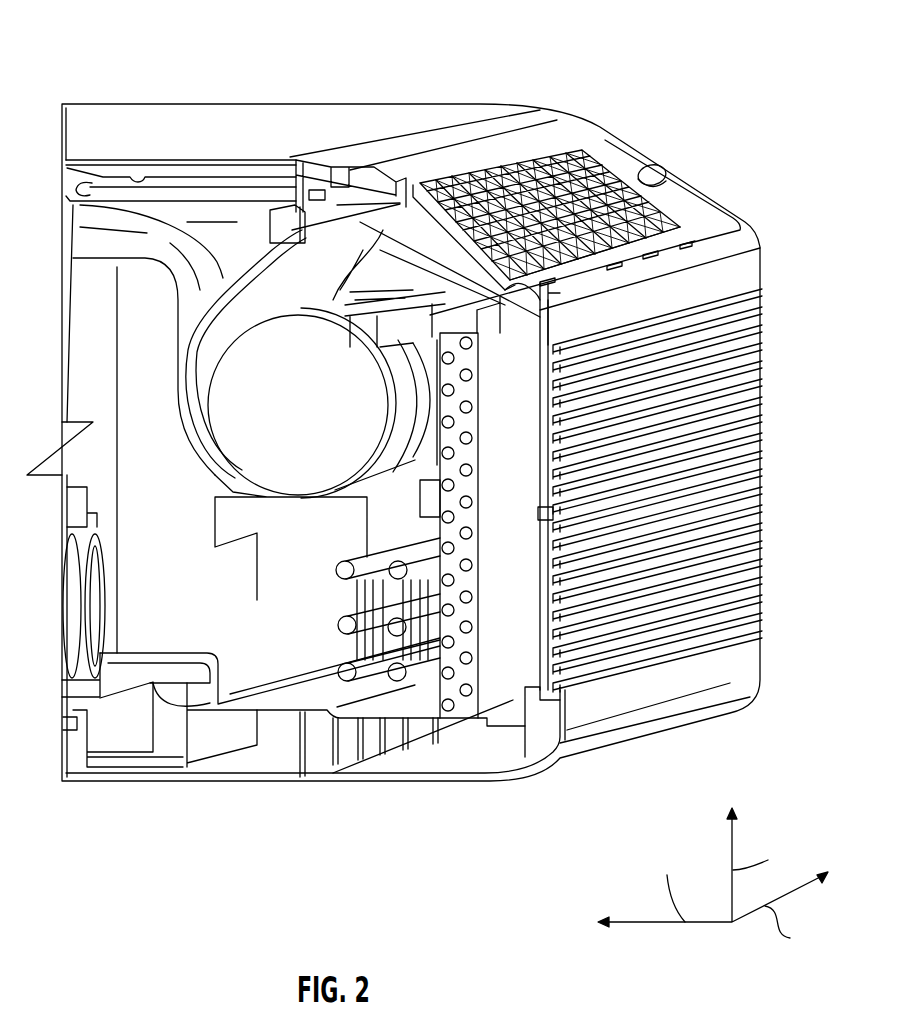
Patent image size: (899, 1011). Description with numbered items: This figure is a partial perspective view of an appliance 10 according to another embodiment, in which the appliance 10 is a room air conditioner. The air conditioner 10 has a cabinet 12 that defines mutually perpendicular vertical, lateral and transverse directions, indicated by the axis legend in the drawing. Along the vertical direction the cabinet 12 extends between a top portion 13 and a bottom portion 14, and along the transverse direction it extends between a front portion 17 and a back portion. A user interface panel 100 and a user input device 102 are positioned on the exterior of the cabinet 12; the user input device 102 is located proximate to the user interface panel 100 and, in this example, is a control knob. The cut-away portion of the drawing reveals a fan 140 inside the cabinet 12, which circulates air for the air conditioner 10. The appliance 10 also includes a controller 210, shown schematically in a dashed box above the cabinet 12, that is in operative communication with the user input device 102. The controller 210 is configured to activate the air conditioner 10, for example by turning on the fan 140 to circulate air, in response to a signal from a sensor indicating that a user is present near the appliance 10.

The appliance 10 is at (435, 487).
The cabinet 12 is at (193, 121).
The top portion 13 is at (97, 98).
The bottom portion 14 is at (197, 785).
The front portion 17 is at (766, 653).
The user interface panel 100 is at (515, 183).
The user input device 102 is at (650, 178).
The fan 140 is at (283, 413).
The controller 210 is at (537, 104).